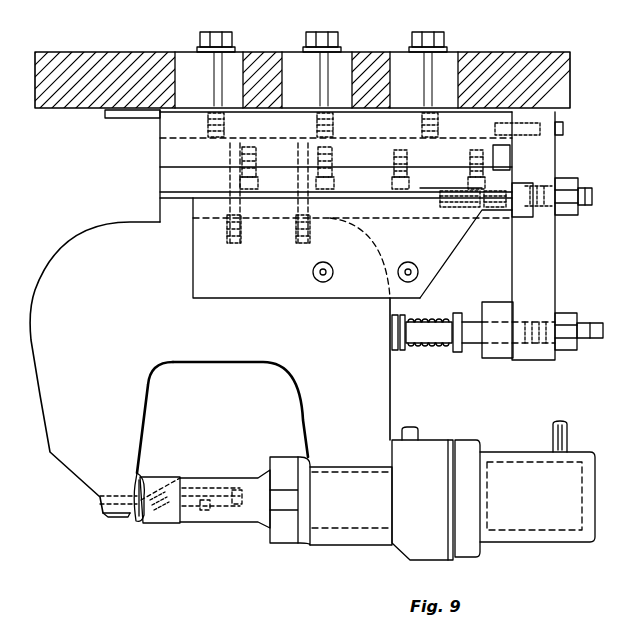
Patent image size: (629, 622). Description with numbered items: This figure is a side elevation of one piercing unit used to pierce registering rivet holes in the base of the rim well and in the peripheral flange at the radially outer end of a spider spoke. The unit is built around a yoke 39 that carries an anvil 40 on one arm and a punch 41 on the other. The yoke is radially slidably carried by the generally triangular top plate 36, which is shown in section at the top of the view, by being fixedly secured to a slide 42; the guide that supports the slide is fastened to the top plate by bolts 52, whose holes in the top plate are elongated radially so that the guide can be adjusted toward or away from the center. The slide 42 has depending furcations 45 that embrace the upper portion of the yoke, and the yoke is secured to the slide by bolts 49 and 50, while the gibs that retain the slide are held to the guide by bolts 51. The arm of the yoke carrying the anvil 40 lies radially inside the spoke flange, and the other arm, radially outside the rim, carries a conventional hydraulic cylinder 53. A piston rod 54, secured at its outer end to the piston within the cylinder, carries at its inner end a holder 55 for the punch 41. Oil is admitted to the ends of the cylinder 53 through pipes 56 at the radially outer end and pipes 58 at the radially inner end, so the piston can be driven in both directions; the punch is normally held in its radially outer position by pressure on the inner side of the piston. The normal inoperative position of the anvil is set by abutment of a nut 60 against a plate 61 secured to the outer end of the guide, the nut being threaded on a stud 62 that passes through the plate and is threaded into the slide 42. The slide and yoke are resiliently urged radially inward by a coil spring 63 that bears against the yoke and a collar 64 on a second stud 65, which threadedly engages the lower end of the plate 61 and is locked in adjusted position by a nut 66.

The top plate 36 is at (92, 53).
The bolts 52 is at (227, 40).
The bolts 50 is at (300, 201).
The bolts 51 is at (335, 185).
The nut 60 is at (558, 178).
The stud 62 is at (572, 194).
The plate 61 is at (553, 252).
The slide 42 is at (455, 247).
The furcations 45 is at (195, 276).
The bolts 49 is at (313, 274).
The collar 64 is at (456, 315).
The coil spring 63 is at (418, 350).
The stud 65 is at (471, 355).
The nut 66 is at (563, 352).
The yoke 39 is at (58, 258).
The punch 41 is at (128, 502).
The anvil 40 is at (130, 522).
The holder 55 is at (162, 525).
The piston rod 54 is at (248, 524).
The pipes 58 is at (418, 434).
The hydraulic cylinder 53 is at (497, 545).
The pipes 56 is at (568, 430).